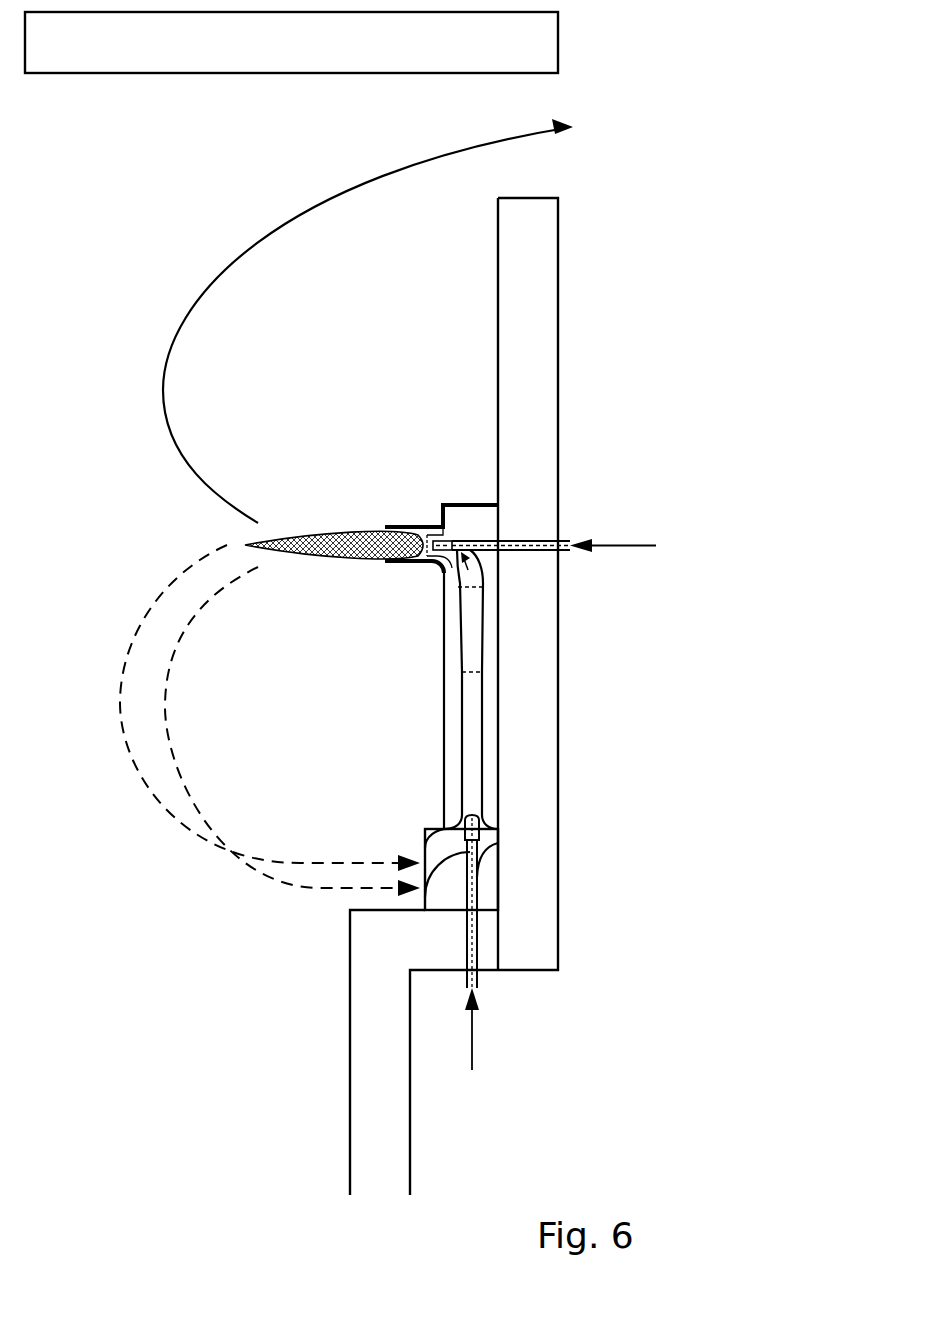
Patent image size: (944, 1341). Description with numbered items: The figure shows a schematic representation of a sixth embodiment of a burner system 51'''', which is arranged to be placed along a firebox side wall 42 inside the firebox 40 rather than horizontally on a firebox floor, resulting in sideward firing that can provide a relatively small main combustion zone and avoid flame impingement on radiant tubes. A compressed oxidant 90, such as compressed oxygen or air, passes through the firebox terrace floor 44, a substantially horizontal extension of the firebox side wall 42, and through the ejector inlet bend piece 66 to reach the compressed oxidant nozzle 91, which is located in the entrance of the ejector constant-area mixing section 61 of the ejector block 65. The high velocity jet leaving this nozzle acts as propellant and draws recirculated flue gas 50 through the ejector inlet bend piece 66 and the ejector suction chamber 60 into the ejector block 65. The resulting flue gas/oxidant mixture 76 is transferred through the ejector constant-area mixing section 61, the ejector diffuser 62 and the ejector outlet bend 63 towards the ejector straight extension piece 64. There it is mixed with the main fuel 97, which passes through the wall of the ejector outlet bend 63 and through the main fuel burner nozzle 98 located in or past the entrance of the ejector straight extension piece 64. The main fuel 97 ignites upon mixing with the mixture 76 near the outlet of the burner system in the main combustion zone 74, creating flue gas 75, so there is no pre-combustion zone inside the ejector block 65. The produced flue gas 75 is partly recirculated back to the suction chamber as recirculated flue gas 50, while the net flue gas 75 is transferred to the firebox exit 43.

The firebox 40 is at (580, 46).
The firebox side wall 42 is at (560, 365).
The firebox exit 43 is at (544, 170).
The firebox terrace floor 44 is at (497, 955).
The recirculated flue gas 50 is at (167, 684).
The burner system 51'''' is at (365, 707).
The ejector suction chamber 60 is at (456, 818).
The ejector constant-area mixing section 61 is at (460, 727).
The ejector diffuser 62 is at (455, 649).
The ejector outlet bend 63 is at (437, 569).
The ejector straight extension piece 64 is at (401, 527).
The ejector block 65 is at (496, 776).
The ejector inlet bend piece 66 is at (424, 843).
The main combustion zone 74 is at (332, 544).
The flue gas 75 is at (163, 360).
The flue gas/oxidant mixture 76 is at (468, 772).
The compressed oxidant 90 is at (472, 1048).
The compressed oxidant nozzle 91 is at (499, 853).
The main fuel 97 is at (633, 540).
The main fuel burner nozzle 98 is at (449, 546).